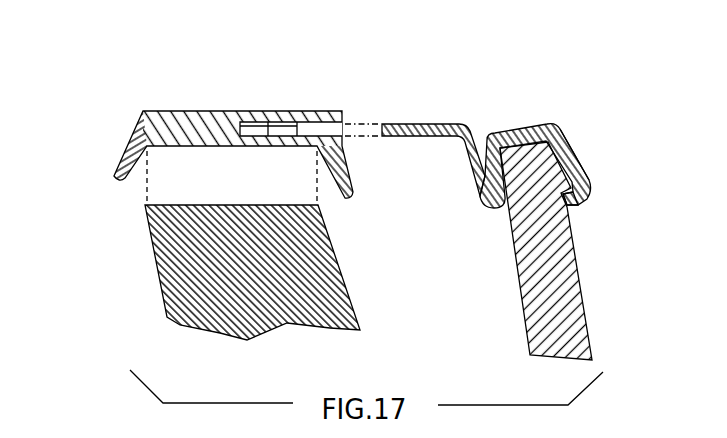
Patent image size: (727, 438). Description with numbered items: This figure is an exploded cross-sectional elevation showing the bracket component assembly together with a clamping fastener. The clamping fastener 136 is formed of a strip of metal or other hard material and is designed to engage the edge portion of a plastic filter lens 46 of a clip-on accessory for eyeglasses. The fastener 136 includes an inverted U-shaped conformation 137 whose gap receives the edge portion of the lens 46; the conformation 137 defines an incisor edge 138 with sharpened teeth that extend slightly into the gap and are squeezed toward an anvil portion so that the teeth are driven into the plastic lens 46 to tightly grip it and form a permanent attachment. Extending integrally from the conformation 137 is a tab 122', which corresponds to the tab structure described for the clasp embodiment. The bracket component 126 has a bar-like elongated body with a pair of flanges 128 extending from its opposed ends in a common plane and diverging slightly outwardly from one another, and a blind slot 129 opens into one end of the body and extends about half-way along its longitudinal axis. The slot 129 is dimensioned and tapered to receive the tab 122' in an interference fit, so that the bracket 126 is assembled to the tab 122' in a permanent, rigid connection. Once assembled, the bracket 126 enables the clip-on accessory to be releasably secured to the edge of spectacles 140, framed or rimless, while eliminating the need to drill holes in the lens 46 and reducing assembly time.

The bracket component 126 is at (209, 98).
The flanges 128 is at (127, 150).
The blind slot 129 is at (282, 128).
The tab 122' is at (433, 117).
The clamping fastener 136 is at (562, 101).
The inverted U-shaped conformation 137 is at (587, 155).
The incisor edge 138 is at (575, 207).
The lens 46 is at (560, 312).
The spectacles 140 is at (177, 285).